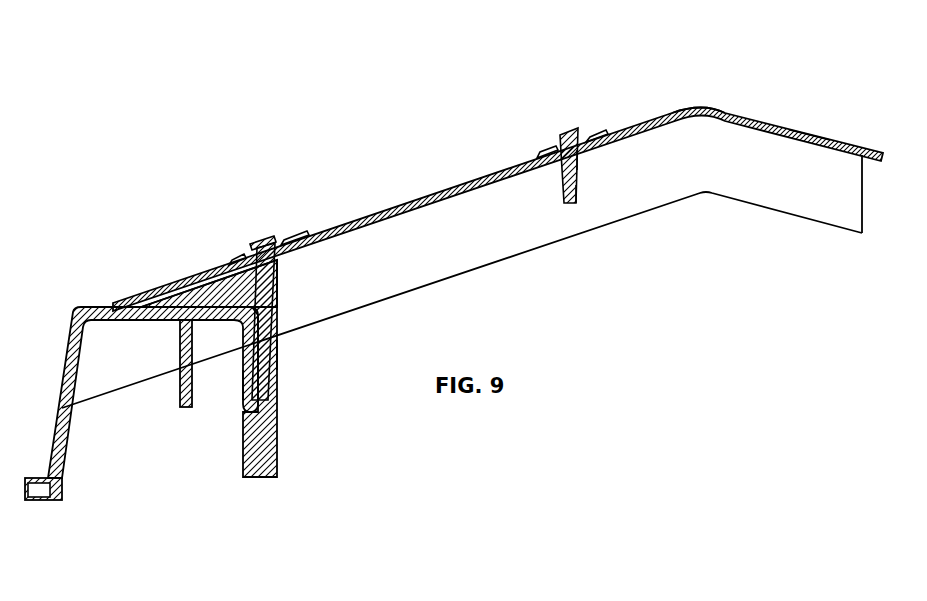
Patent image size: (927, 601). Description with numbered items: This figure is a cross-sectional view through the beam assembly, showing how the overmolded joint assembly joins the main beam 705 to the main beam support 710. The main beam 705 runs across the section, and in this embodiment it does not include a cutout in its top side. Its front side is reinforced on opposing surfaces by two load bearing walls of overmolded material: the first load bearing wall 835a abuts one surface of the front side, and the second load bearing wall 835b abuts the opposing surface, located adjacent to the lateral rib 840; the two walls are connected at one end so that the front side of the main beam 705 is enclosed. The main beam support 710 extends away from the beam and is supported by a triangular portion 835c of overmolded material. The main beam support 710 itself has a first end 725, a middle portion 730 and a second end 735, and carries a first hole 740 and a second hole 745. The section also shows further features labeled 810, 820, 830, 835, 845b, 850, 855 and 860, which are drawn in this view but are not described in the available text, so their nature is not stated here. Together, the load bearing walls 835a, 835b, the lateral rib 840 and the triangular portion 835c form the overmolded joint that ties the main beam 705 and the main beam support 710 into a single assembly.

The main beam 705 is at (57, 490).
The main beam support 710 is at (152, 283).
The first end 725 is at (113, 302).
The middle portion 730 is at (700, 107).
The second end 735 is at (808, 135).
The first hole 740 is at (298, 246).
The second hole 745 is at (556, 165).
The fastener / clip 810 is at (254, 236).
The fastener / clip 820 is at (568, 128).
The channel in foot 830 is at (36, 500).
The support member 835 is at (262, 445).
The first load bearing wall 835a is at (279, 355).
The second load bearing wall 835b is at (247, 383).
The triangular portion 835c is at (190, 268).
The lateral rib 840 is at (183, 392).
The panel surface 845b is at (116, 366).
The clip shank end 850 is at (590, 198).
The junction 855 is at (284, 270).
The clip head 860 is at (582, 158).